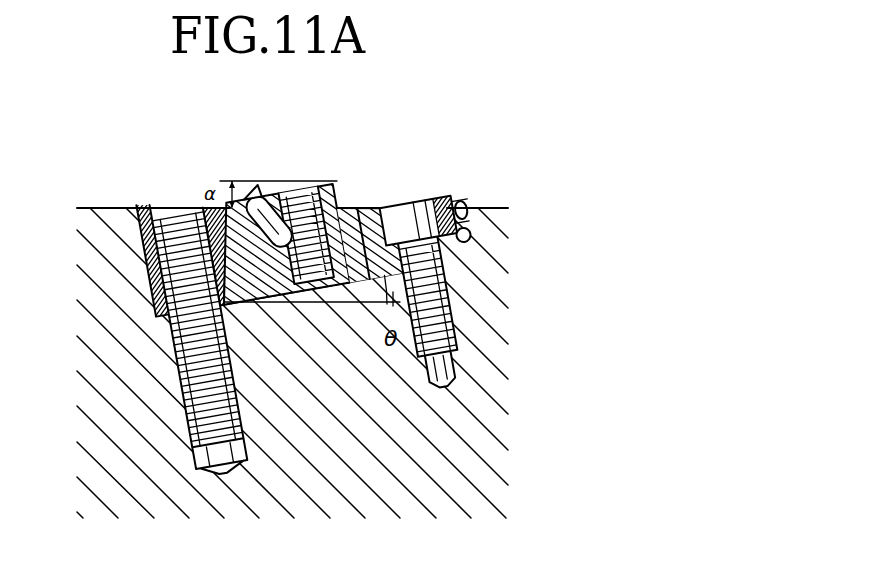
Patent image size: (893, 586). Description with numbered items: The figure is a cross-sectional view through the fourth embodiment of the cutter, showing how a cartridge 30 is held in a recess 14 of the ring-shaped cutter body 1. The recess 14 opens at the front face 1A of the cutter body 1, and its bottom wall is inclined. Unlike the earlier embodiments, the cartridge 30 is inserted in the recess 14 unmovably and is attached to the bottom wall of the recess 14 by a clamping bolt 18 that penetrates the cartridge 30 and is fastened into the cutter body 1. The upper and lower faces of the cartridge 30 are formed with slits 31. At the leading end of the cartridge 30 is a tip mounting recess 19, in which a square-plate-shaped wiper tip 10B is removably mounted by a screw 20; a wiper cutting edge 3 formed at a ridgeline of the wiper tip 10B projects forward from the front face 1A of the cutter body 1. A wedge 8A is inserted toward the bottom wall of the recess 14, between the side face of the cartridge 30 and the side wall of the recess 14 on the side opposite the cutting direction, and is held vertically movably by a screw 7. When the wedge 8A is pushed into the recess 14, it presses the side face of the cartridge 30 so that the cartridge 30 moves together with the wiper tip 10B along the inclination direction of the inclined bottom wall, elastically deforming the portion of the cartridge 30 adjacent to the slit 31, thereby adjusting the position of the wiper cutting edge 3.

The cutter body 1 is at (487, 333).
The front face of the cutter body 1A is at (478, 207).
The wiper cutting edge 3 is at (327, 182).
The screw 7 is at (172, 350).
The wedge 8A is at (207, 207).
The wiper tip 10B is at (260, 200).
The recess 14 is at (457, 228).
The clamping bolt 18 is at (414, 205).
The tip mounting recess 19 is at (248, 200).
The screw 20 is at (290, 190).
The cartridge 30 is at (457, 250).
The slit 31 is at (347, 212).